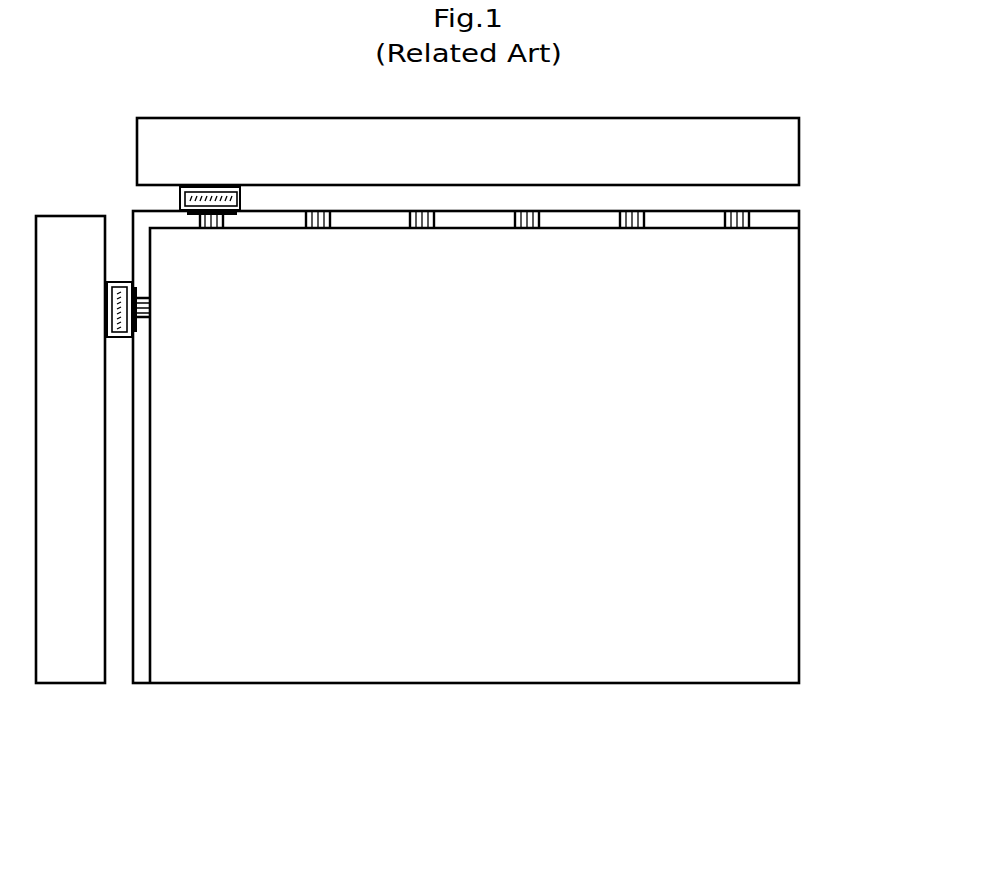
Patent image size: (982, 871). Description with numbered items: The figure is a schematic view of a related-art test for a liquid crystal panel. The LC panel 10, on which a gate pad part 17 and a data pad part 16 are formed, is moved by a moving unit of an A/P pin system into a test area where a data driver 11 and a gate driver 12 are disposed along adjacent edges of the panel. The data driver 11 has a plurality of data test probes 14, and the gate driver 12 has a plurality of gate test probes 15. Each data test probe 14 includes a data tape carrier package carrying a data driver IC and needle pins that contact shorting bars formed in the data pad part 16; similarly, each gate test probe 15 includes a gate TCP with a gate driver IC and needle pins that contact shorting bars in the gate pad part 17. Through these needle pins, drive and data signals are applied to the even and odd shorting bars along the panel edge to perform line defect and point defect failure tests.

The LC panel 10 is at (800, 449).
The data driver 11 is at (137, 152).
The gate driver 12 is at (70, 683).
The data test probe 14 is at (181, 198).
The gate test probe 15 is at (115, 282).
The data pad part 16 is at (227, 221).
The gate pad part 17 is at (138, 298).